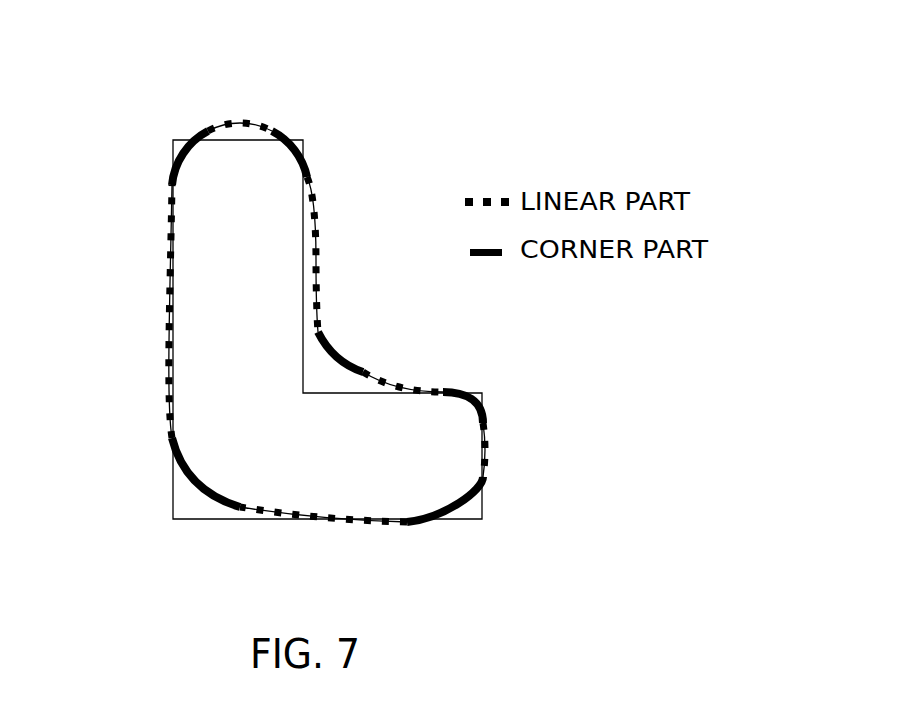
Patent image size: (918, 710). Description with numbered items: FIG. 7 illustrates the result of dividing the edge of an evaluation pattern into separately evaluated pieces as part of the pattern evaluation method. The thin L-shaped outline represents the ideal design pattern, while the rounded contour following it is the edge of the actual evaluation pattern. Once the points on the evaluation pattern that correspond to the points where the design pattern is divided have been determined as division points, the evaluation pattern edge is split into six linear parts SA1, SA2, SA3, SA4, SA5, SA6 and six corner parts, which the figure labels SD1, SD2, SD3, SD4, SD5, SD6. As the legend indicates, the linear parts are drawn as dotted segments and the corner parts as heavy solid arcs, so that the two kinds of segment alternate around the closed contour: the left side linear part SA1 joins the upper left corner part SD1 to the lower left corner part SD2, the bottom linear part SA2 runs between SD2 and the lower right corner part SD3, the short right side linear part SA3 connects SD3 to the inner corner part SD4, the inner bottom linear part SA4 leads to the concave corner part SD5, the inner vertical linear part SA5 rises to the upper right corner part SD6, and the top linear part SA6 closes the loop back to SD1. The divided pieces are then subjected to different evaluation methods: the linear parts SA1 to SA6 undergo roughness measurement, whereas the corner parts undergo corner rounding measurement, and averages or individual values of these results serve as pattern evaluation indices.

The linear part SA1 is at (168, 255).
The linear part SA2 is at (320, 523).
The linear part SA3 is at (486, 457).
The linear part SA4 is at (408, 383).
The linear part SA5 is at (315, 222).
The linear part SA6 is at (227, 127).
The corner part (upper left) SD1 is at (178, 155).
The corner part (lower left) SD2 is at (203, 493).
The corner part (lower right) SD3 is at (477, 487).
The corner part (inner right) SD4 is at (484, 397).
The corner part (inner concave) SD5 is at (357, 355).
The corner part (upper right) SD6 is at (303, 147).